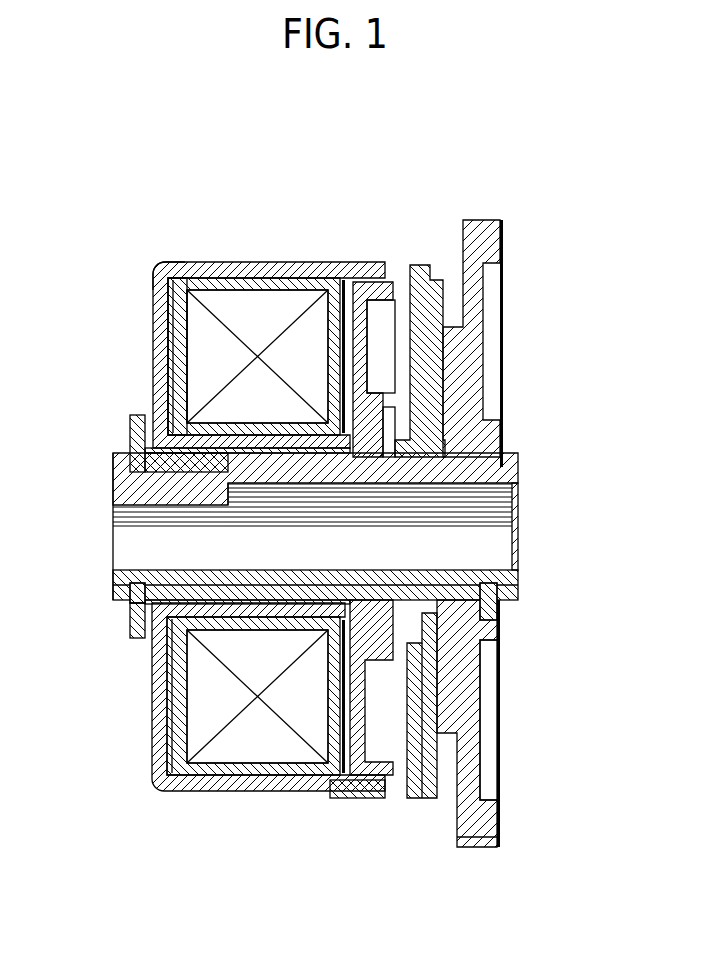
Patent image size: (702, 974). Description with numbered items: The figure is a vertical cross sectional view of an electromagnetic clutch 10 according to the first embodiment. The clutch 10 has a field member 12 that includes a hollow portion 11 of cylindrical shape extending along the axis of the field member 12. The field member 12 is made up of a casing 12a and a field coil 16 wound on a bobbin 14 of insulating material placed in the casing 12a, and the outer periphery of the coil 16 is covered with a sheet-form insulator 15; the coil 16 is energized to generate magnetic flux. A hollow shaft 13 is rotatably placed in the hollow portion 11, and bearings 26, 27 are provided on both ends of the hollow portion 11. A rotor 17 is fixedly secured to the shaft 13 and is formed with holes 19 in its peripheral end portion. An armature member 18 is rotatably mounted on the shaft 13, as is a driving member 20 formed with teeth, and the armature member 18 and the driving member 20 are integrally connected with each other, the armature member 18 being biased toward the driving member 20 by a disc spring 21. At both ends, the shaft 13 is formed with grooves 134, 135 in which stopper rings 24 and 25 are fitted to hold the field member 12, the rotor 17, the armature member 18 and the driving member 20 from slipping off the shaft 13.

The electromagnetic clutch 10 is at (313, 161).
The hollow portion 11 is at (253, 447).
The field member 12 is at (226, 262).
The casing 12a is at (181, 262).
The hollow shaft 13 is at (118, 478).
The bobbin 14 is at (172, 378).
The insulator 15 is at (301, 278).
The field coil 16 is at (197, 338).
The rotor 17 is at (397, 283).
The armature member 18 is at (403, 790).
The holes 19 is at (325, 735).
The driving member 20 is at (499, 840).
The disc spring 21 is at (428, 798).
The stopper ring 24 is at (132, 638).
The stopper ring 25 is at (500, 645).
The bearing 26 is at (160, 446).
The bearing 27 is at (343, 485).
The groove 134 is at (130, 600).
The groove 135 is at (512, 603).